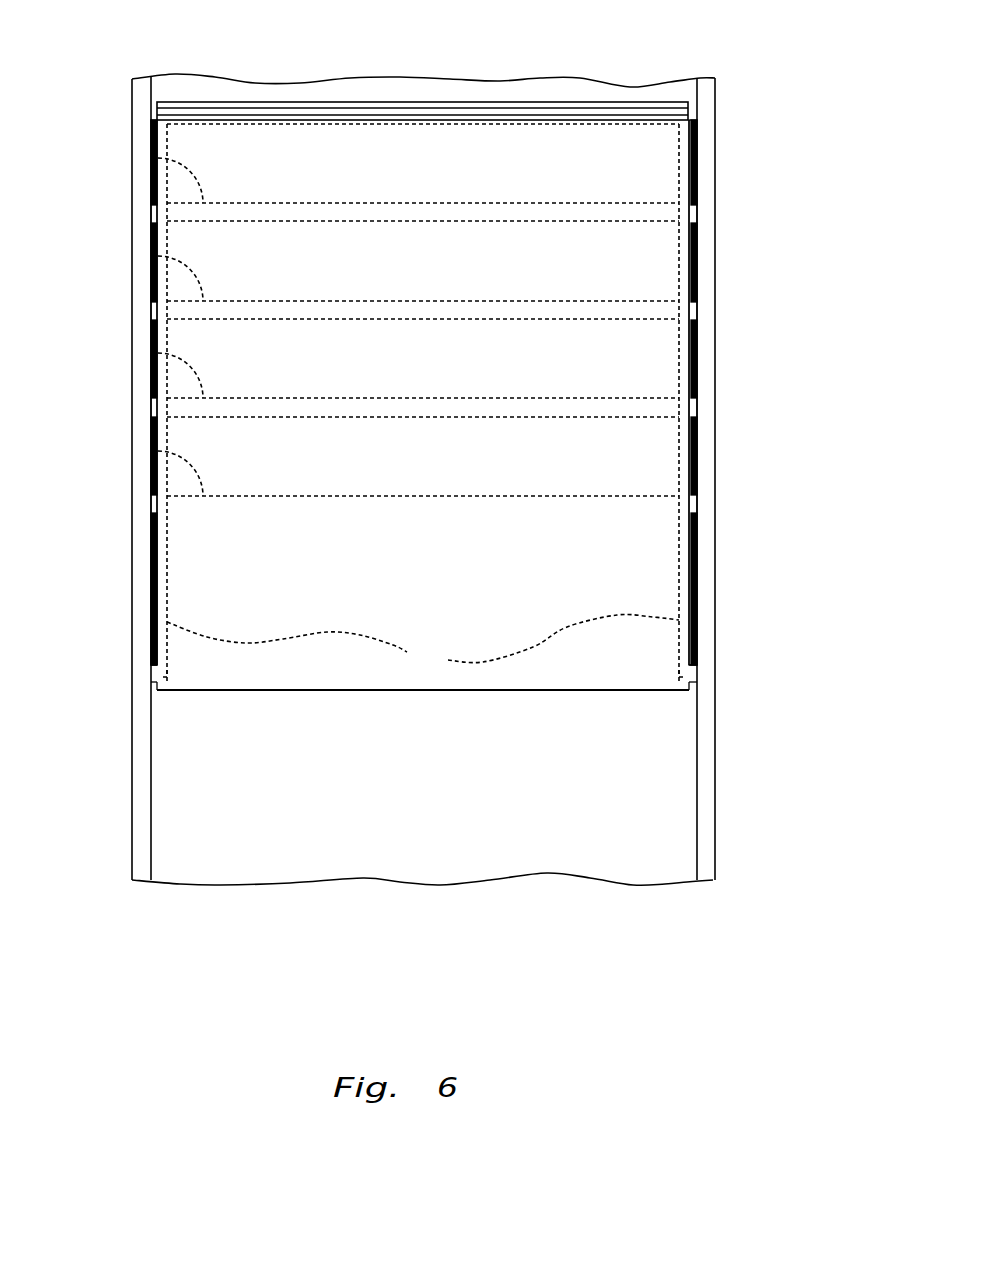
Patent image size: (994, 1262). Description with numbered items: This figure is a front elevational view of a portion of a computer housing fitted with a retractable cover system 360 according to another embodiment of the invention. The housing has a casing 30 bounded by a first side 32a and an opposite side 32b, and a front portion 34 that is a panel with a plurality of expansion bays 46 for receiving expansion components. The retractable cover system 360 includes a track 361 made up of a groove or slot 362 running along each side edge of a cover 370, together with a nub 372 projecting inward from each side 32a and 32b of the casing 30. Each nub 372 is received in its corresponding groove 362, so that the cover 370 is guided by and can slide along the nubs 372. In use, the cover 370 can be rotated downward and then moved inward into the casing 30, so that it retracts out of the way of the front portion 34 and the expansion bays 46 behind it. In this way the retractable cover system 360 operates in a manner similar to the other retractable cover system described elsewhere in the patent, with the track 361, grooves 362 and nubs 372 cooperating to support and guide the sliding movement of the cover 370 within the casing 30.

The casing 30 is at (733, 108).
The side of the casing 32a is at (140, 535).
The side of the casing 32b is at (712, 400).
The front portion 34 is at (350, 88).
The cover 370 is at (585, 105).
The expansion bays 46 is at (158, 155).
The retractable cover system 360 is at (179, 709).
The track 361 is at (423, 643).
The groove 362 is at (167, 546).
The nub 372 is at (163, 676).